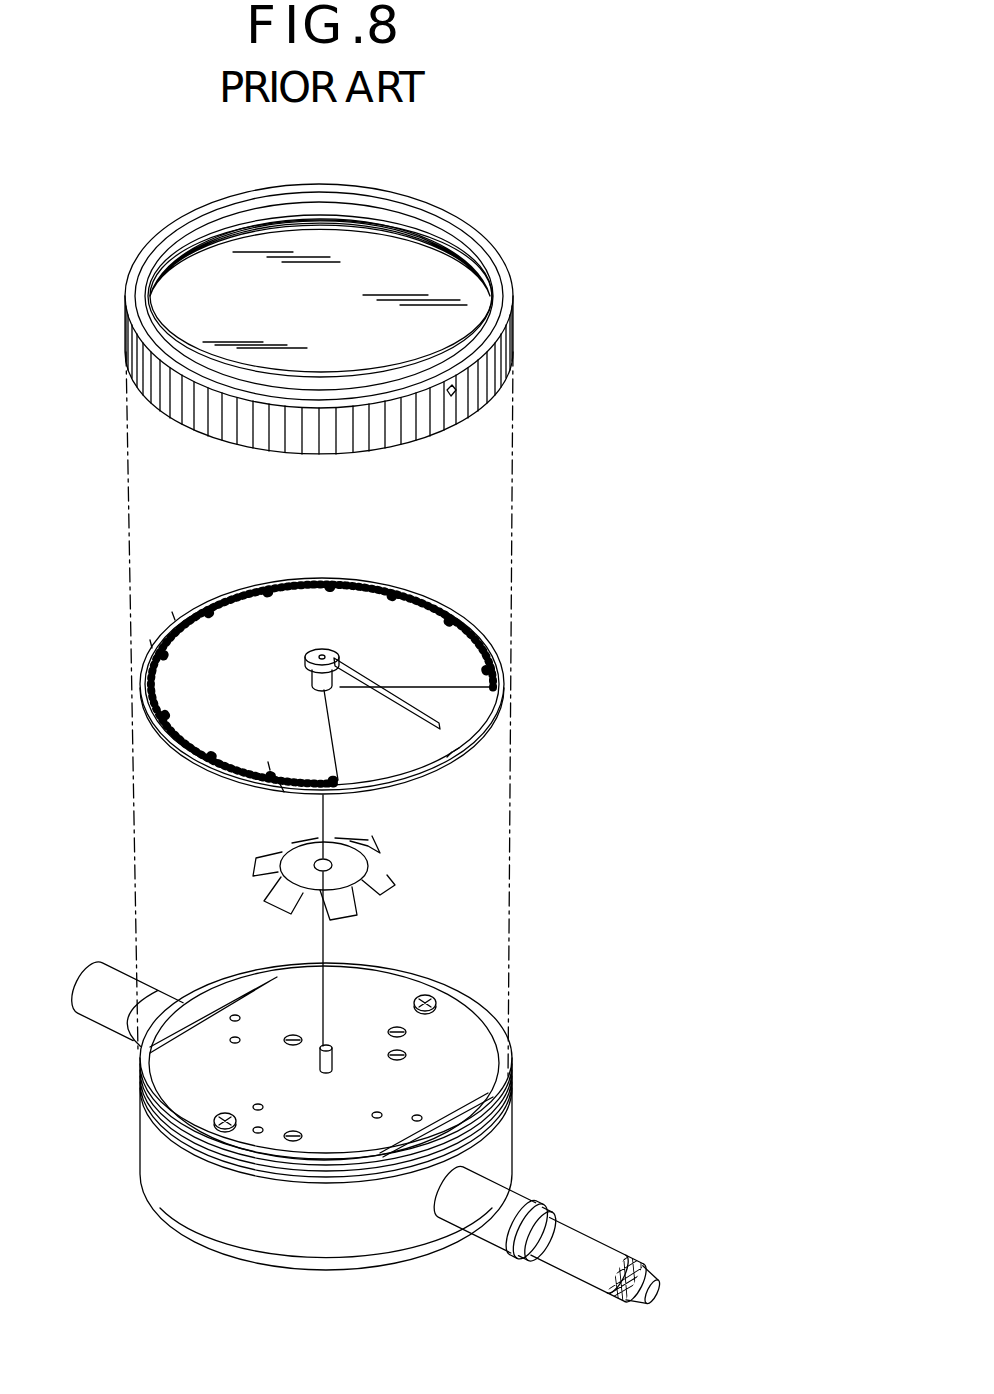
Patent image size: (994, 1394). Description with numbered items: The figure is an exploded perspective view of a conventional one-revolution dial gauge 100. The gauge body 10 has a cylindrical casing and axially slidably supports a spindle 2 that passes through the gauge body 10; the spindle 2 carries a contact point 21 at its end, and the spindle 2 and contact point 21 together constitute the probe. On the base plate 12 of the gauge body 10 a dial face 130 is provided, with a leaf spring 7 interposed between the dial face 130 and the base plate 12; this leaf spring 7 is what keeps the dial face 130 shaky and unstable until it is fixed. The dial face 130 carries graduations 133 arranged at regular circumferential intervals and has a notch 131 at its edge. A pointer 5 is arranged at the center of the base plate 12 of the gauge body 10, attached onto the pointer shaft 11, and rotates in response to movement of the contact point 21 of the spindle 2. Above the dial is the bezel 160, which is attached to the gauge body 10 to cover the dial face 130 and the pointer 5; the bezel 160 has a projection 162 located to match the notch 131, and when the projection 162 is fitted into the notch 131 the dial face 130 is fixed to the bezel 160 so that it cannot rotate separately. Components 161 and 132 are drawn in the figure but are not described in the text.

The one-revolution dial gauge 100 is at (614, 552).
The bezel 160 is at (513, 322).
The crystal (cover glass) 161 is at (473, 233).
The projection 162 is at (451, 397).
The dial face 130 is at (463, 605).
The notch 131 is at (450, 754).
The pointer hub 132 is at (318, 687).
The graduations 133 is at (155, 643).
The pointer 5 is at (432, 722).
The leaf spring 7 is at (393, 875).
The gauge body 10 is at (141, 1145).
The pointer shaft 11 is at (332, 1042).
The base plate 12 is at (468, 1033).
The spindle 2 is at (580, 1248).
The contact point 21 is at (650, 1278).